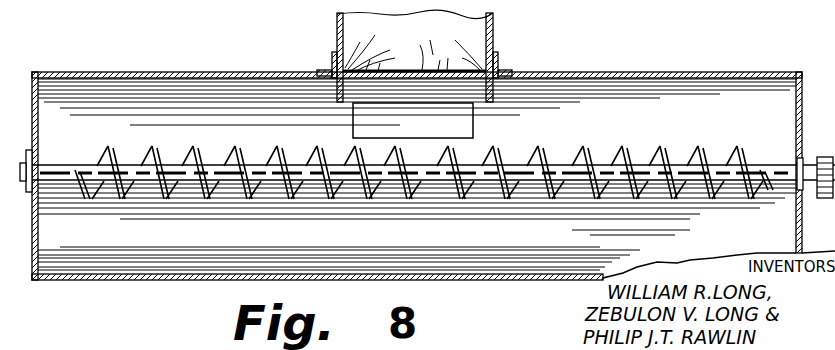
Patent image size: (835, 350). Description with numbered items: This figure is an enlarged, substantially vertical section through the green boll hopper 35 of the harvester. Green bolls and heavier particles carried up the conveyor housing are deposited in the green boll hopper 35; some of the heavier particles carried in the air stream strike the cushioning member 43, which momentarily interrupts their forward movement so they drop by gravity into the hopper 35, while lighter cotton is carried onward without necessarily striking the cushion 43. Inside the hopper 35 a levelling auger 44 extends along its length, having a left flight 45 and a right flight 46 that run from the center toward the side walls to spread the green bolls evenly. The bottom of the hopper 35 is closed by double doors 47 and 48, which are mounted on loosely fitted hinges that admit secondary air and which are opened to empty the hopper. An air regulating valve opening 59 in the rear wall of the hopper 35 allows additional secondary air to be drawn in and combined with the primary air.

The green boll hopper 35 is at (75, 263).
The cushioning member 43 is at (468, 30).
The levelling auger 44 is at (424, 153).
The left flight 45 is at (213, 192).
The right flight 46 is at (634, 147).
The door 47 is at (157, 265).
The door 48 is at (225, 268).
The air regulating valve opening 59 is at (411, 131).